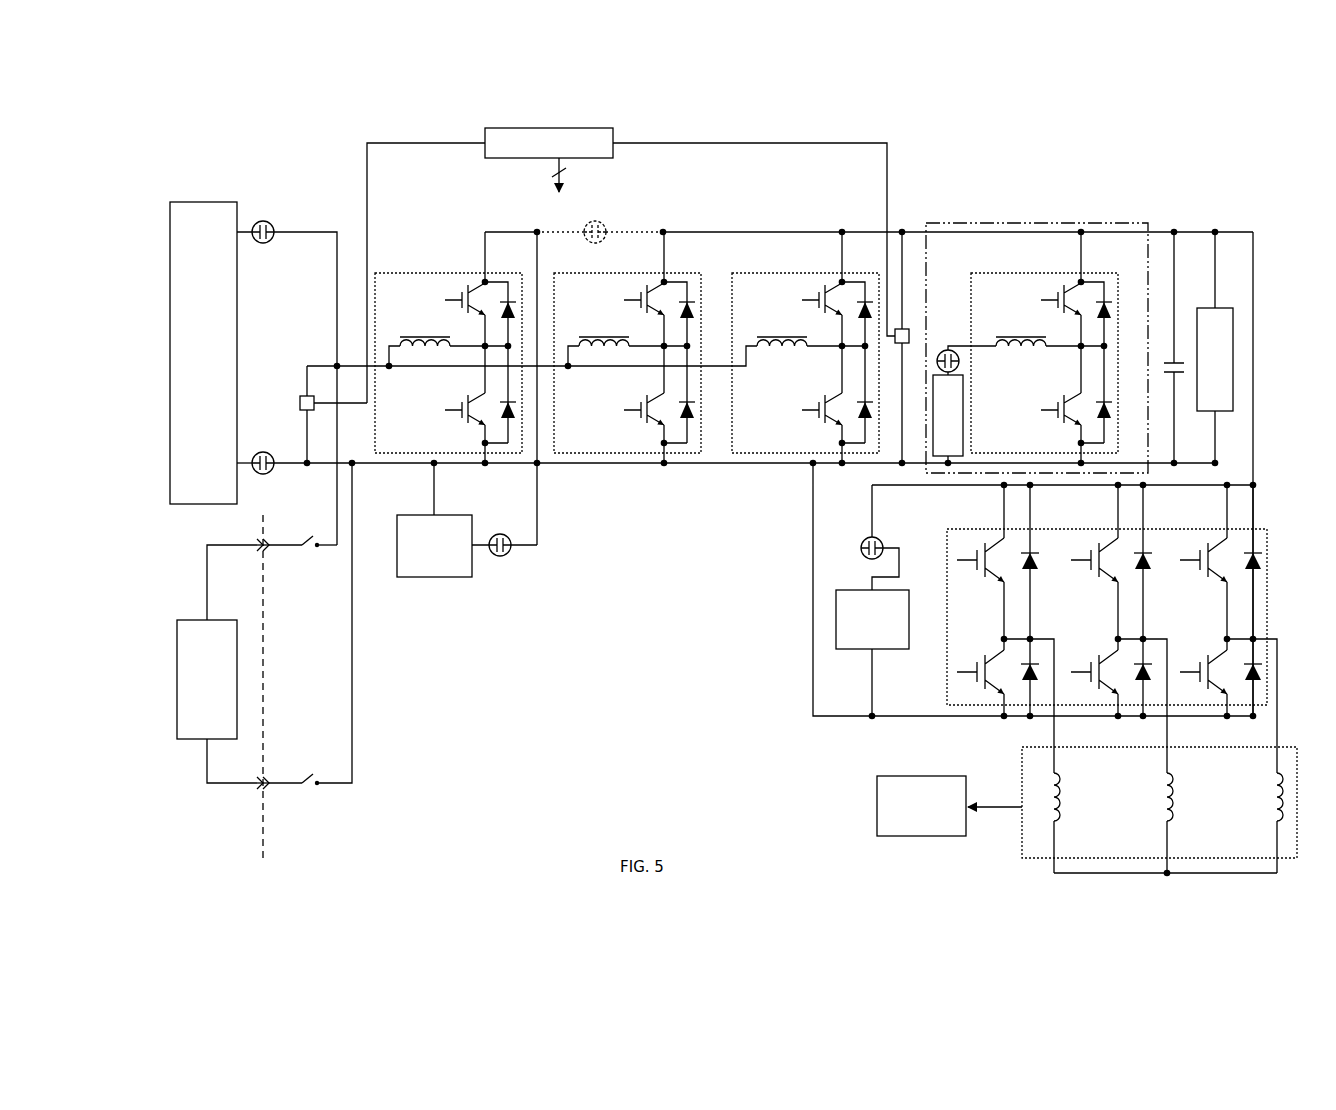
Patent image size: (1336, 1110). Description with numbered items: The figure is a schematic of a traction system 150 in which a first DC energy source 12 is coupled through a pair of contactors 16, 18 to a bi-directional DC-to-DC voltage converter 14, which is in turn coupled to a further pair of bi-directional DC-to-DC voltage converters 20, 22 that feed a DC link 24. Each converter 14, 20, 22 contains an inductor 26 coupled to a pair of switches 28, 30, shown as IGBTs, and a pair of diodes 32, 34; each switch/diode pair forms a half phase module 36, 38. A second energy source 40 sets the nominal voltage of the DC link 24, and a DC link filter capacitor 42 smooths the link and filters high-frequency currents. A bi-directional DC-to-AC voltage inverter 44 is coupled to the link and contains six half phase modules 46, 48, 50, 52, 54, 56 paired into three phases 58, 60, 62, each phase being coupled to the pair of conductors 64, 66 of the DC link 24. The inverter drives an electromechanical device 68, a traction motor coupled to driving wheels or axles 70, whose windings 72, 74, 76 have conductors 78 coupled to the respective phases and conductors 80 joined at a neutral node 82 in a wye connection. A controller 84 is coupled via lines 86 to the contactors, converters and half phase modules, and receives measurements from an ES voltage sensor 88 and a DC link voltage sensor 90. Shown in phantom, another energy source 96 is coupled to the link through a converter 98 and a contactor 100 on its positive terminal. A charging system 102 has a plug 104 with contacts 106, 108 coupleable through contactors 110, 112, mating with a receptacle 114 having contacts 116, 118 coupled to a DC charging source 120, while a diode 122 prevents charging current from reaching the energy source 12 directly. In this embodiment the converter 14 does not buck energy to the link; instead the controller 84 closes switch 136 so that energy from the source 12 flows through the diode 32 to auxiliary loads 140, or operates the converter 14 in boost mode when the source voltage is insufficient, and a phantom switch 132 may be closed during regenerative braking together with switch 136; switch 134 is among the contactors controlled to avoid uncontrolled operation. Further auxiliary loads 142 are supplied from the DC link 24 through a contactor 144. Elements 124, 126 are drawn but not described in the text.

The DC energy source 12 is at (203, 201).
The bi-directional DC-to-DC voltage converter 14 is at (423, 270).
The contactor 16 is at (260, 221).
The contactor 18 is at (261, 452).
The bi-directional DC-to-DC voltage converter 20 is at (598, 270).
The bi-directional DC-to-DC voltage converter 22 is at (775, 270).
The DC link 24 is at (742, 232).
The inductor 26 is at (446, 353).
The switch 28 is at (444, 300).
The switch 30 is at (444, 410).
The diode 32 is at (509, 302).
The diode 34 is at (505, 400).
The half phase module 36 is at (446, 316).
The half phase module 38 is at (446, 434).
The second energy source 40 is at (1208, 308).
The DC link filter capacitor 42 is at (1165, 357).
The bi-directional DC-to-AC voltage inverter 44 is at (947, 535).
The half phase module 46 is at (977, 579).
The half phase module 48 is at (977, 691).
The half phase module 50 is at (1089, 579).
The half phase module 52 is at (1089, 691).
The half phase module 54 is at (1197, 579).
The half phase module 56 is at (1197, 691).
The phase 58 is at (1000, 522).
The phase 60 is at (1113, 522).
The phase 62 is at (1223, 522).
The conductor 64 is at (712, 232).
The conductor 66 is at (756, 466).
The electromechanical device 68 is at (1020, 775).
The driving wheel or axle 70 is at (877, 807).
The winding 72 is at (1062, 808).
The winding 74 is at (1175, 808).
The winding 76 is at (1272, 790).
The conductor 78 is at (1058, 775).
The conductor 80 is at (1058, 847).
The neutral node 82 is at (1118, 872).
The controller 84 is at (497, 128).
The line 86 is at (562, 166).
The ES voltage sensor 88 is at (300, 397).
The DC link voltage sensor 90 is at (910, 330).
The energy source 96 is at (933, 410).
The bi-directional DC-to-DC voltage converter 98 is at (1024, 272).
The contactor 100 is at (944, 351).
The charging system 102 is at (400, 648).
The plug 104 is at (272, 835).
The contact 106 is at (268, 540).
The contact 108 is at (265, 789).
The contactor 110 is at (303, 550).
The contactor 112 is at (303, 780).
The receptacle or plug 114 is at (257, 825).
The contact 116 is at (262, 550).
The contact 118 is at (262, 783).
The DC charging source 120 is at (195, 620).
The diode 122 is at (1039, 565).
The upper diode phase B 124 is at (1152, 565).
The upper diode phase C 126 is at (1262, 565).
The switch 132 is at (608, 225).
The switch 134 is at (1030, 688).
The switch 136 is at (1143, 688).
The auxiliary load 140 is at (1253, 688).
The auxiliary load 142 is at (855, 650).
The contactor 144 is at (861, 548).
The traction system 150 is at (907, 110).